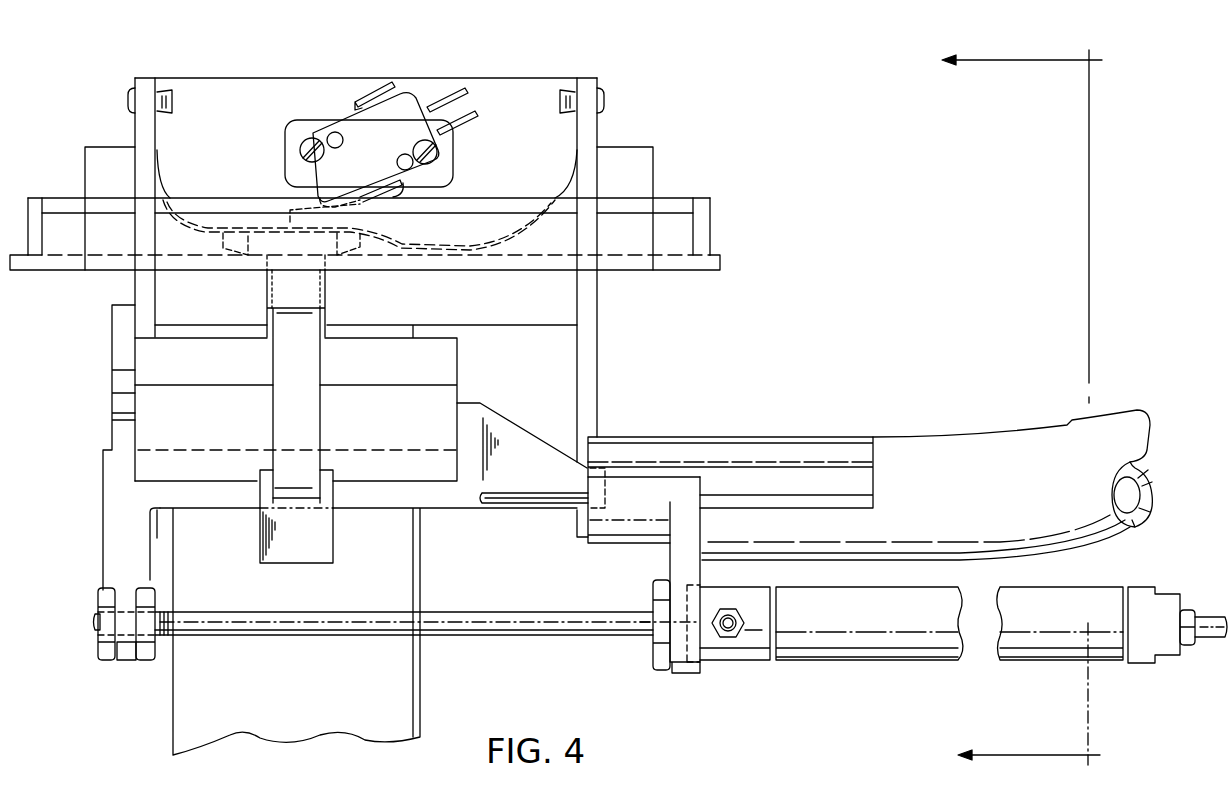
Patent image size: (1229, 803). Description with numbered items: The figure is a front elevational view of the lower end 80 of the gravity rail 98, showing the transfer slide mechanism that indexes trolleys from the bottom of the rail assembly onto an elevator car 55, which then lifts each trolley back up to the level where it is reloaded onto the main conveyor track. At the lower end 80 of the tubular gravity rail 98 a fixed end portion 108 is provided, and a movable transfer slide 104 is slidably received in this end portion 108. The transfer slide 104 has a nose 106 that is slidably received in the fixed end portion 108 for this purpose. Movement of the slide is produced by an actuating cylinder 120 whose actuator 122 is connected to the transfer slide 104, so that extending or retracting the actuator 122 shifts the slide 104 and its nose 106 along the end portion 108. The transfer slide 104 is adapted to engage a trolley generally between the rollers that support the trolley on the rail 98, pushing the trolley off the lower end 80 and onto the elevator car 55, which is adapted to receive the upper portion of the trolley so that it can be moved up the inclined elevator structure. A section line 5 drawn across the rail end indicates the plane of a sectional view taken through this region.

The section line 5- 5 is at (1027, 407).
The elevator car 55 is at (600, 127).
The lower end 80 is at (948, 437).
The gravity rail 98 is at (1117, 413).
The transfer slide 104 is at (115, 553).
The nose 106 is at (532, 448).
The fixed end portion 108 is at (843, 437).
The actuating cylinder 120 is at (822, 664).
The actuator 122 is at (580, 636).